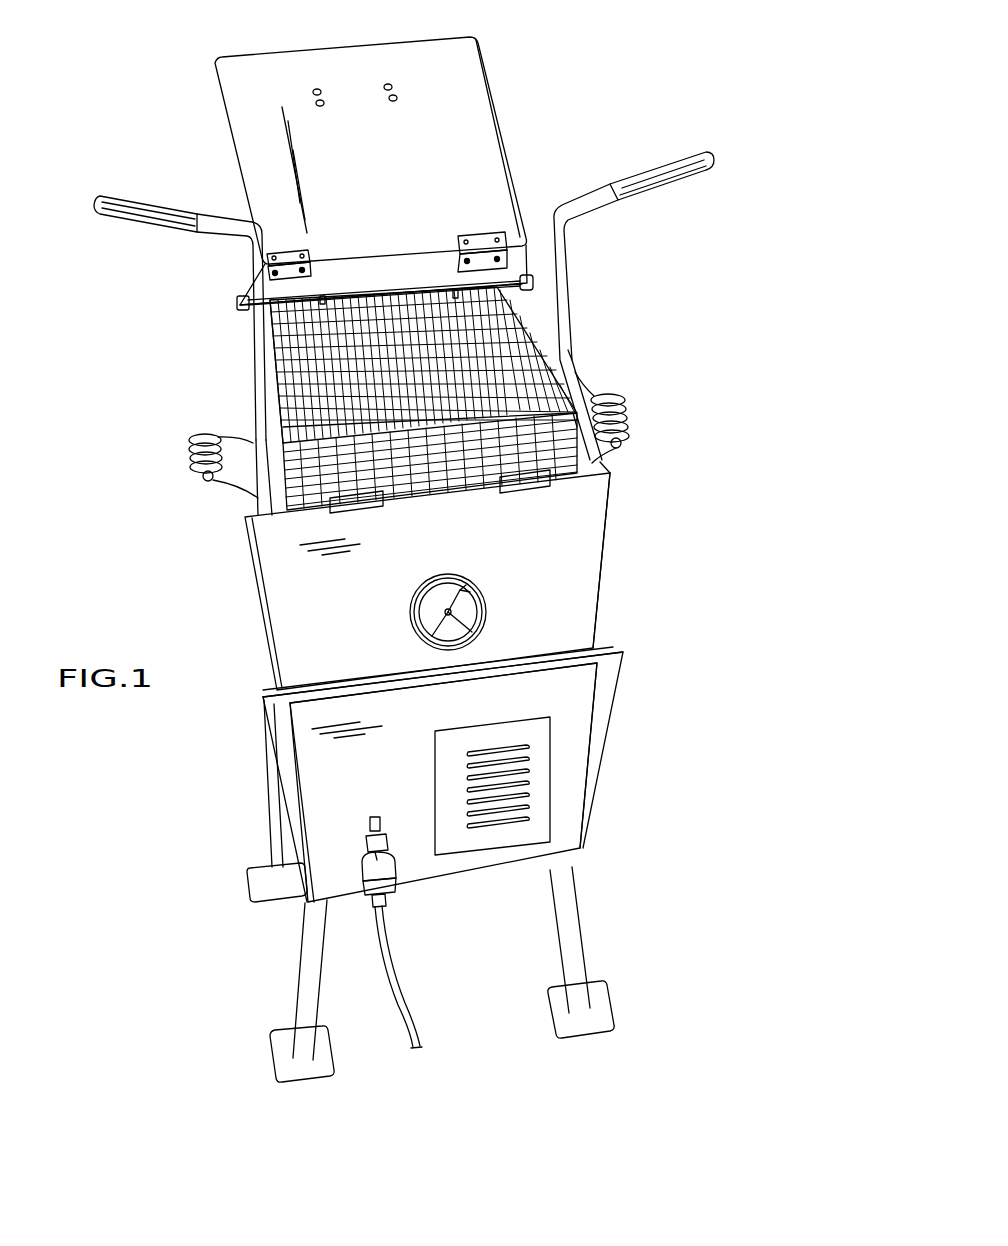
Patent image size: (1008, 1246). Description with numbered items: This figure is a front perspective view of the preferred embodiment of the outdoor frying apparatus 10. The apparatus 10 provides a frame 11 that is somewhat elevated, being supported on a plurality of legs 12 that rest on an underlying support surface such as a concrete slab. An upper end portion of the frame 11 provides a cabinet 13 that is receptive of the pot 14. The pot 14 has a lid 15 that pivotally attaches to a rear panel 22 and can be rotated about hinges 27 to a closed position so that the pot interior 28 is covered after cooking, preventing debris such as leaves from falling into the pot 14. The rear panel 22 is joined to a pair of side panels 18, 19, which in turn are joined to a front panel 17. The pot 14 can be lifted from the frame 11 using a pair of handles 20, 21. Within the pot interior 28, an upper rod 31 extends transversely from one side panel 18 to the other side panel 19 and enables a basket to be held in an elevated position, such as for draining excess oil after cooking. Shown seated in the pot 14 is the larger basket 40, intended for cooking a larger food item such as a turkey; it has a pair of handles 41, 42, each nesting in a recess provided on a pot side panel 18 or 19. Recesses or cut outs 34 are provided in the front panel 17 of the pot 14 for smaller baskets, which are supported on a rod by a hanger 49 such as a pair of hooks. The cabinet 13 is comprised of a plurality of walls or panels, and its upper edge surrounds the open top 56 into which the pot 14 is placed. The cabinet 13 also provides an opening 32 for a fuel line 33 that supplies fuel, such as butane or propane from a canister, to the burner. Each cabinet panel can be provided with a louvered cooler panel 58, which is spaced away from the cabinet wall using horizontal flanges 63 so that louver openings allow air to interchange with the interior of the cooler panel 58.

The outdoor frying apparatus 10 is at (607, 83).
The frame 11 is at (275, 792).
The legs 12 is at (600, 962).
The cabinet 13 is at (443, 782).
The pot 14 is at (586, 524).
The lid 15 is at (480, 50).
The front panel 17 is at (427, 581).
The side panel 18 is at (262, 372).
The side panel 19 is at (575, 372).
The handle 20 is at (207, 482).
The handle 21 is at (612, 398).
The rear panel 22 is at (367, 270).
The hinges 27 is at (290, 252).
The pot interior 28 is at (597, 464).
The upper rod 31 is at (519, 245).
The opening 32 is at (378, 818).
The fuel line 33 is at (402, 985).
The recesses or cut outs 34 is at (375, 505).
The basket 40 is at (423, 497).
The handle 41 is at (172, 235).
The handle 42 is at (705, 175).
The hanger 49 is at (322, 295).
The open top 56 is at (598, 640).
The louvered cooler panels 58 is at (537, 828).
The horizontal flanges 63 is at (548, 682).